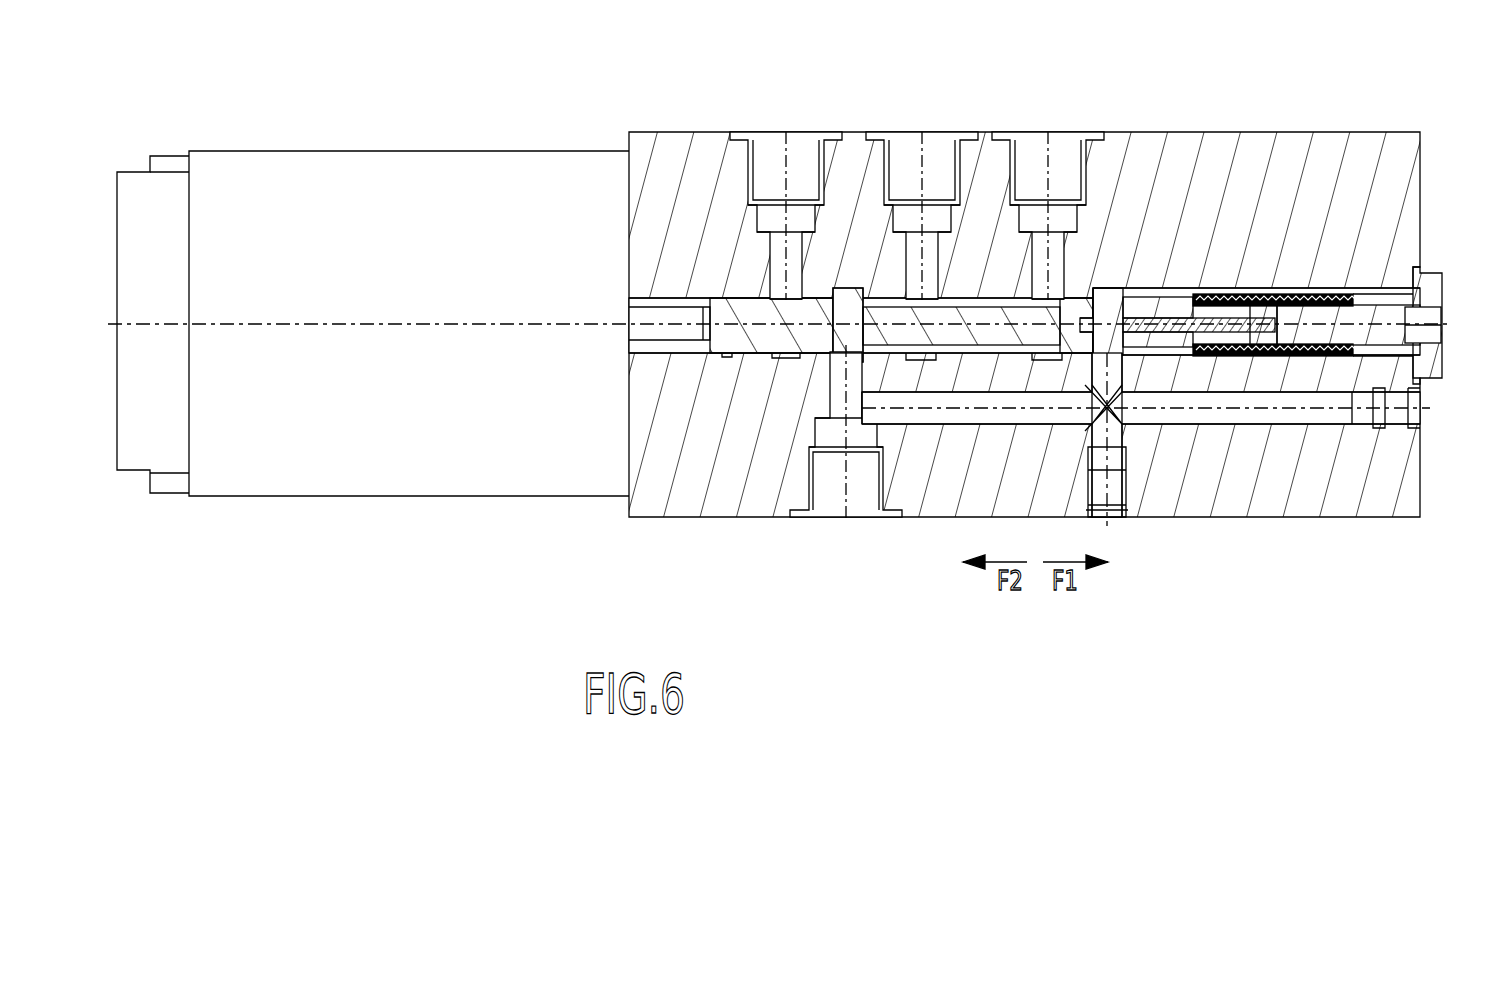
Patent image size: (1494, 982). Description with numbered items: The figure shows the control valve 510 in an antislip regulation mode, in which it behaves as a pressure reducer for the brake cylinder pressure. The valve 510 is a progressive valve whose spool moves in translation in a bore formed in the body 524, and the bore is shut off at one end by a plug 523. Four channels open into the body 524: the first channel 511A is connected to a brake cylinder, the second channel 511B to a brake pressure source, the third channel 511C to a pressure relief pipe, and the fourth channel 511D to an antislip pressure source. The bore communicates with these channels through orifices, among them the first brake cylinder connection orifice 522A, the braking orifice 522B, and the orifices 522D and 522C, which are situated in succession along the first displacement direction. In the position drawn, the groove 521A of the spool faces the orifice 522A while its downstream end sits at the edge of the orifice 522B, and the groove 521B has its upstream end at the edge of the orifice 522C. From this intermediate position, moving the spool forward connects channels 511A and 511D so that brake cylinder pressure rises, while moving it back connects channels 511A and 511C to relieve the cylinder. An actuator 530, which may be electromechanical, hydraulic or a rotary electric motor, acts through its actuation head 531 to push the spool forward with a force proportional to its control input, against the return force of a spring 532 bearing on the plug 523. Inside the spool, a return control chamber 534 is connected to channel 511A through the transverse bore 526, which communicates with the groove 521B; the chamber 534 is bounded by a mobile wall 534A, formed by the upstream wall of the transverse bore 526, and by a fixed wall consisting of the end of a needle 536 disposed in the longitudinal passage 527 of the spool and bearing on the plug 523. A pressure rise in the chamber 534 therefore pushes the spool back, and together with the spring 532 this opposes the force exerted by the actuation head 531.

The control valve 510 is at (779, 385).
The first channel 511A is at (830, 493).
The second channel 511B is at (764, 165).
The third channel 511C is at (1040, 165).
The fourth channel 511D is at (918, 160).
The groove 521A is at (875, 290).
The groove 521B is at (1080, 318).
The first brake cylinder connection orifice 522A is at (834, 362).
The braking orifice 522B is at (774, 290).
The orifice 522C is at (1074, 300).
The orifice 522D is at (930, 305).
The plug 523 is at (1365, 292).
The body 524 is at (1241, 495).
The transverse bore 526 is at (1088, 410).
The longitudinal passage 527 is at (1150, 292).
The actuator 530 is at (348, 170).
The actuation head 531 is at (640, 318).
The spring 532 is at (1272, 292).
The return control chamber 534 is at (1098, 292).
The mobile wall 534A is at (1086, 352).
The needle 536 is at (1193, 352).